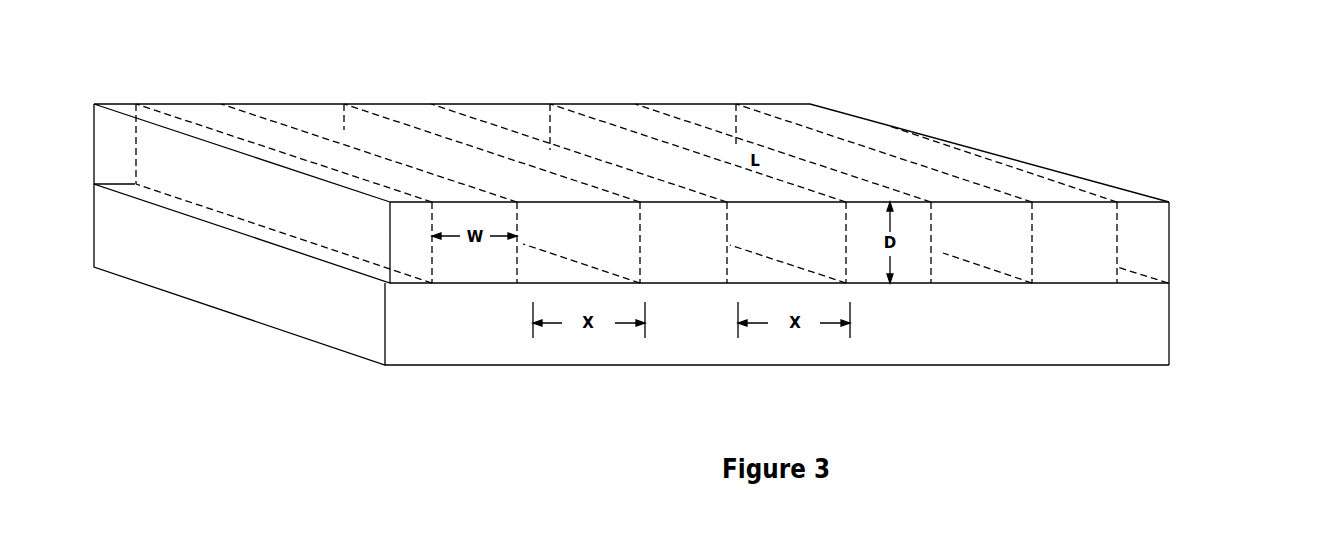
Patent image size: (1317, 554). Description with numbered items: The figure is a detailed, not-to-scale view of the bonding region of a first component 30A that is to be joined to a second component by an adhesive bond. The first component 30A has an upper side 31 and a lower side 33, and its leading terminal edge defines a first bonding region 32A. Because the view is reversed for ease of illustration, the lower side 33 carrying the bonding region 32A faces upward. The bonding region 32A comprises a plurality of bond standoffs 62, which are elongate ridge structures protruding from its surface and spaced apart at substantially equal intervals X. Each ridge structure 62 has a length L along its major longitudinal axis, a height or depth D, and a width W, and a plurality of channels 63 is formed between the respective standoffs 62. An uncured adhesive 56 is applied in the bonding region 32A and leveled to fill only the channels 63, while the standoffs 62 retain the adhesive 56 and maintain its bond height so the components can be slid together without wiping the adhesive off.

The first component 30A is at (1155, 330).
The upper side 31 is at (1133, 366).
The first bonding region 32A is at (432, 283).
The lower side 33 is at (1187, 267).
The uncured adhesive 56 is at (312, 103).
The bond standoffs 62 is at (180, 104).
The channels 63 is at (526, 125).